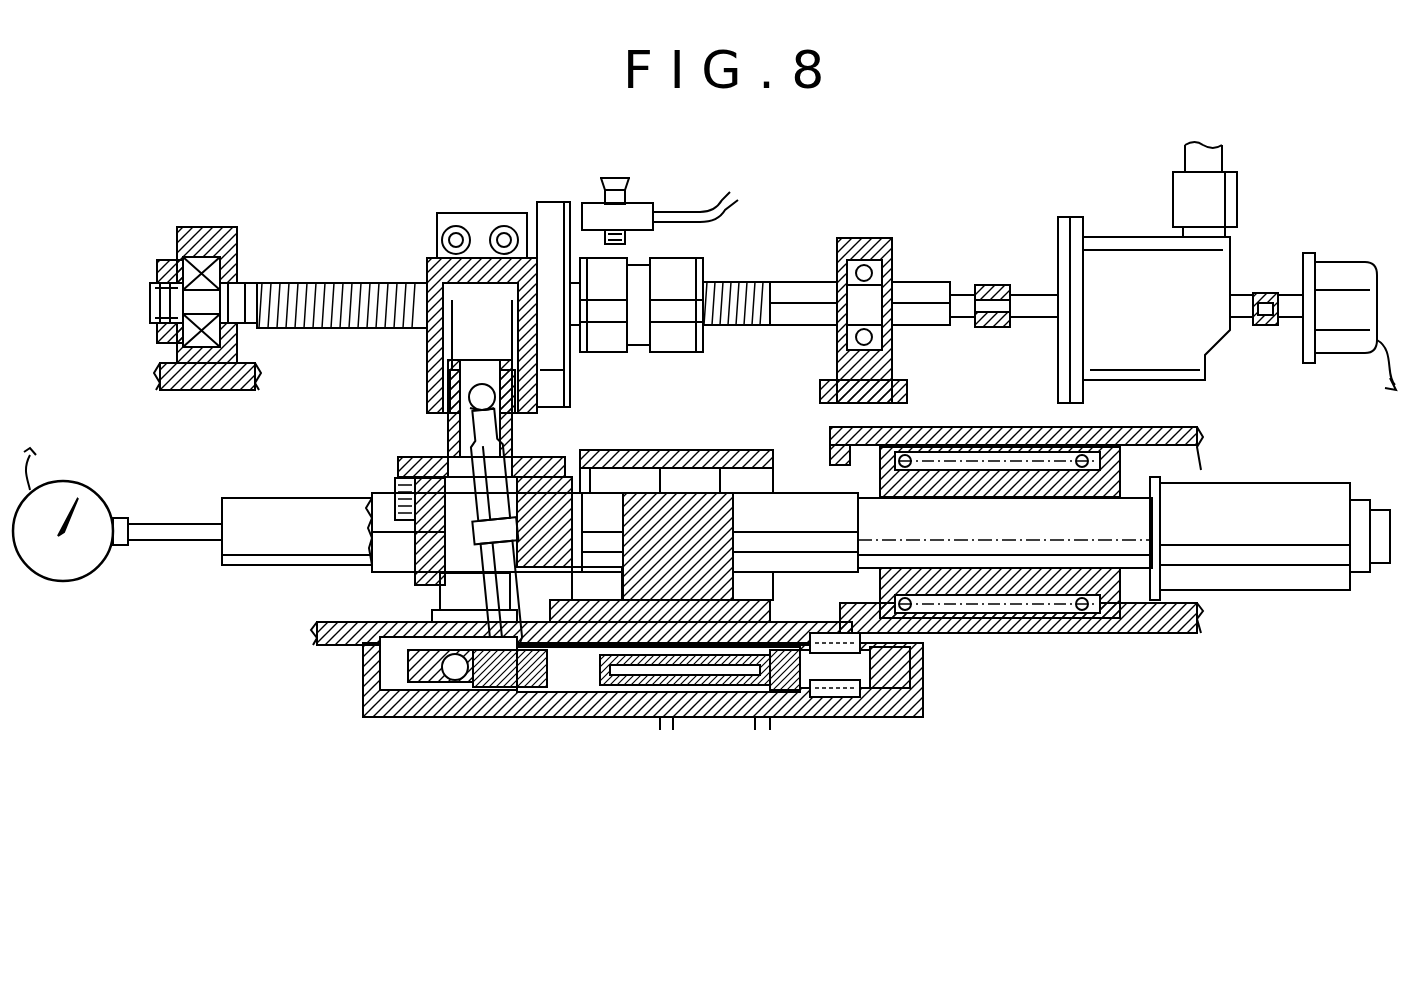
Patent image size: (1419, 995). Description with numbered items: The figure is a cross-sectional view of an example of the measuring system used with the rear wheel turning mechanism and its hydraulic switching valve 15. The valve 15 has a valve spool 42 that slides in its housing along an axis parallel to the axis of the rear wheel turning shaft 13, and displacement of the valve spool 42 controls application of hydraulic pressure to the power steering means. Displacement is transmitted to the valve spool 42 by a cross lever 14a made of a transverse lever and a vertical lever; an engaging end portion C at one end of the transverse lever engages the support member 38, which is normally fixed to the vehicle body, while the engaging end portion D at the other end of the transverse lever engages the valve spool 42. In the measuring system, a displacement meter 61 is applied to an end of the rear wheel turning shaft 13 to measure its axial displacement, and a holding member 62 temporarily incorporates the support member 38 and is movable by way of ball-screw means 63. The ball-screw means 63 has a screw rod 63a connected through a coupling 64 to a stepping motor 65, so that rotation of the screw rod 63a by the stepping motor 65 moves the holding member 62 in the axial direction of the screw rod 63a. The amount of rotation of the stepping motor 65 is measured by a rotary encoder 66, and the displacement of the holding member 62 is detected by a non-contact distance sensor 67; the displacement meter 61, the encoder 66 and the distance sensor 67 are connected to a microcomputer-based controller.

The rear wheel turning shaft 13 is at (278, 566).
The cross lever 14a is at (460, 590).
The hydraulic switching valve 15 is at (573, 718).
The support member 38 is at (520, 445).
The valve spool 42 is at (410, 668).
The displacement meter 61 is at (105, 495).
The holding member 62 is at (427, 270).
The ball-screw means 63 is at (733, 262).
The screw rod 63a is at (720, 340).
The coupling 64 is at (996, 285).
The stepping motor 65 is at (1113, 258).
The rotary encoder 66 is at (1338, 268).
The non-contact distance sensor 67 is at (592, 205).
The engaging end portion C is at (468, 400).
The engaging end portion D is at (447, 690).